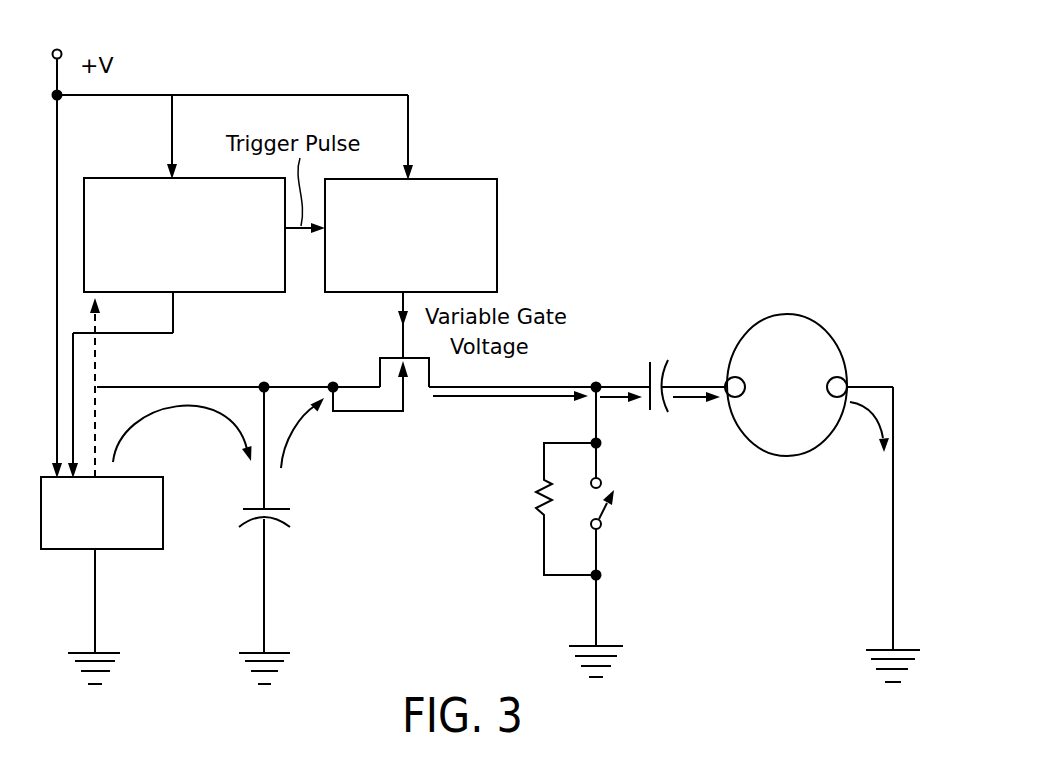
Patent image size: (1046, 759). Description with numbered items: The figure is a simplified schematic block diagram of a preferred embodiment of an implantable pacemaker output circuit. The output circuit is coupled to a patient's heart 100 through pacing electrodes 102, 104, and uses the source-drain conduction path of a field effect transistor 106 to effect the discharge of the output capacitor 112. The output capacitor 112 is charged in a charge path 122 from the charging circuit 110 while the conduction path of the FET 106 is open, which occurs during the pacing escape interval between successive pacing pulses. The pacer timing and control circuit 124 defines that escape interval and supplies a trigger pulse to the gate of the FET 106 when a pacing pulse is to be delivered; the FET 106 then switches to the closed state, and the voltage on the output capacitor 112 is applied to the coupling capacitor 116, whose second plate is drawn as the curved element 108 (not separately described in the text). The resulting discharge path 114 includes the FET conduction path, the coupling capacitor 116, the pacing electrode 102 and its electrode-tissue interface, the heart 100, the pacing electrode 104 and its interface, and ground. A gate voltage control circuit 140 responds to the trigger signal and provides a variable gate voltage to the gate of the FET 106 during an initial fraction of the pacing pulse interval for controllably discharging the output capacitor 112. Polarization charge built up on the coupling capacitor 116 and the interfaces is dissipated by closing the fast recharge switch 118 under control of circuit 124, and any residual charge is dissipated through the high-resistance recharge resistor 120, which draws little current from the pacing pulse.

The heart 100 is at (785, 457).
The pacing electrode 102 is at (727, 382).
The pacing electrode 104 is at (848, 386).
The field effect transistor 106 is at (417, 400).
The output coupling capacitor curved plate 108 is at (659, 410).
The charging circuit 110 is at (108, 549).
The output capacitor 112 is at (281, 525).
The discharge path 114 is at (537, 397).
The coupling capacitor 116 is at (645, 368).
The fast recharge switch 118 is at (603, 517).
The recharge resistor 120 is at (538, 488).
The charge path 122 is at (203, 405).
The pacer timing and control circuit 124 is at (100, 178).
The gate voltage control circuit 140 is at (452, 179).